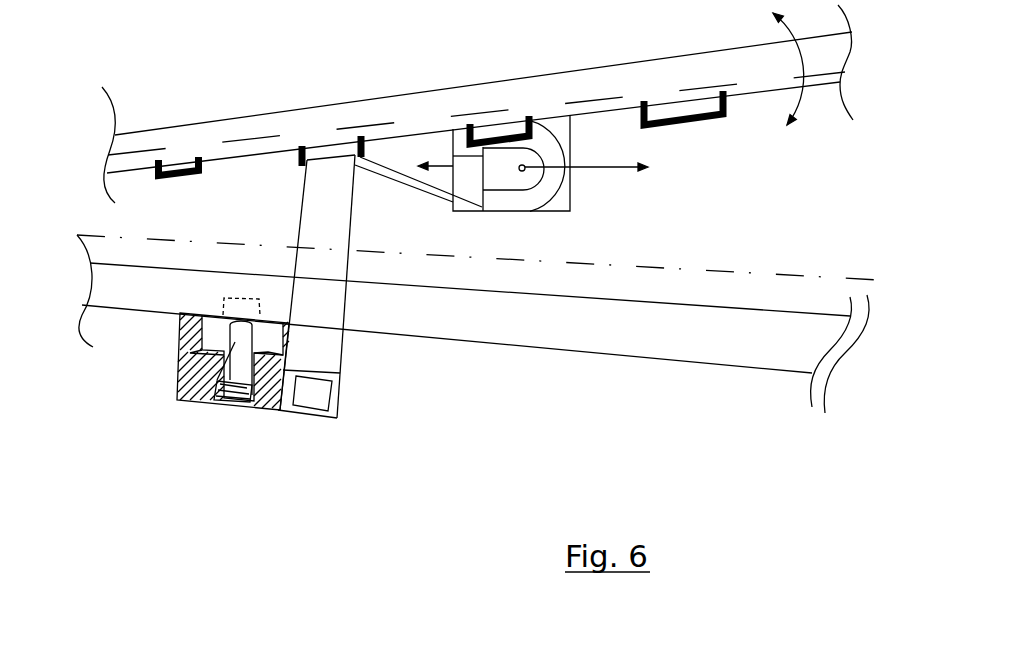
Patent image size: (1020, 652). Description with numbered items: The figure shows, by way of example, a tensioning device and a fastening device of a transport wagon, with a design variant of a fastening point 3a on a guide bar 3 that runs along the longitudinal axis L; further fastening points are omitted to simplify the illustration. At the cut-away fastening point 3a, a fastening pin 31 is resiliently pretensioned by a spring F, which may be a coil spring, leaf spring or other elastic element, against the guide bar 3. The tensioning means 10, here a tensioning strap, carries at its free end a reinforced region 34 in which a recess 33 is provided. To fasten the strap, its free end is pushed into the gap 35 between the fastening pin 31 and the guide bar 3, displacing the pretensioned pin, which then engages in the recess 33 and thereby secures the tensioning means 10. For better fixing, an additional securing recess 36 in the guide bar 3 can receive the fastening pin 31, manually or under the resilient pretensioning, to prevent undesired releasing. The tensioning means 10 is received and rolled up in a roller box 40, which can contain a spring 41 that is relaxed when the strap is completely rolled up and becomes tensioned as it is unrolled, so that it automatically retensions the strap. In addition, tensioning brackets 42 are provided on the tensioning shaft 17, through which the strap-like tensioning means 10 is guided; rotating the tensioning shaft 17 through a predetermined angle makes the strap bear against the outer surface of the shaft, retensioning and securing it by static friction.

The guide bar 3 is at (643, 333).
The fastening point 3a is at (117, 377).
The tensioning means 10 is at (342, 333).
The tensioning shaft 17 is at (578, 80).
The fastening pin 31 is at (177, 380).
The recess 33 is at (313, 393).
The reinforced region 34 is at (342, 382).
The gap 35 is at (197, 335).
The securing recess 36 is at (232, 297).
The roller box 40 is at (555, 200).
The spring 41 is at (540, 146).
The tensioning bracket 42 is at (367, 135).
The spring F is at (237, 402).
The longitudinal axis L is at (707, 268).